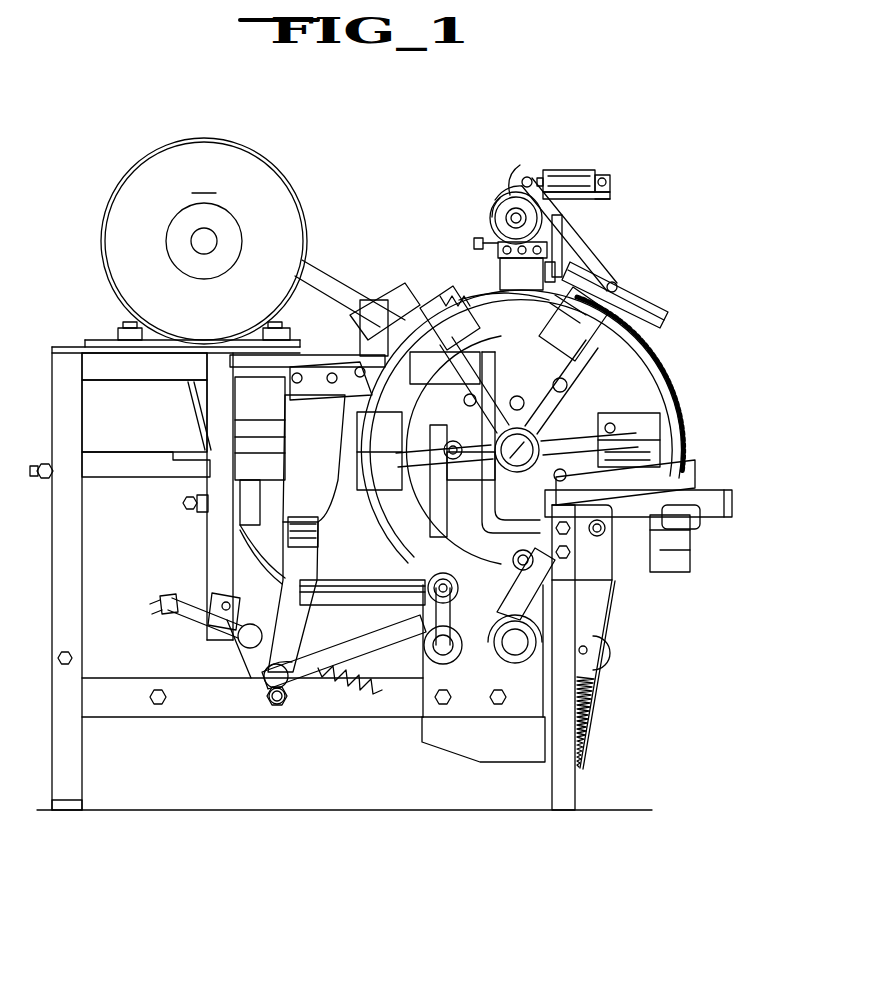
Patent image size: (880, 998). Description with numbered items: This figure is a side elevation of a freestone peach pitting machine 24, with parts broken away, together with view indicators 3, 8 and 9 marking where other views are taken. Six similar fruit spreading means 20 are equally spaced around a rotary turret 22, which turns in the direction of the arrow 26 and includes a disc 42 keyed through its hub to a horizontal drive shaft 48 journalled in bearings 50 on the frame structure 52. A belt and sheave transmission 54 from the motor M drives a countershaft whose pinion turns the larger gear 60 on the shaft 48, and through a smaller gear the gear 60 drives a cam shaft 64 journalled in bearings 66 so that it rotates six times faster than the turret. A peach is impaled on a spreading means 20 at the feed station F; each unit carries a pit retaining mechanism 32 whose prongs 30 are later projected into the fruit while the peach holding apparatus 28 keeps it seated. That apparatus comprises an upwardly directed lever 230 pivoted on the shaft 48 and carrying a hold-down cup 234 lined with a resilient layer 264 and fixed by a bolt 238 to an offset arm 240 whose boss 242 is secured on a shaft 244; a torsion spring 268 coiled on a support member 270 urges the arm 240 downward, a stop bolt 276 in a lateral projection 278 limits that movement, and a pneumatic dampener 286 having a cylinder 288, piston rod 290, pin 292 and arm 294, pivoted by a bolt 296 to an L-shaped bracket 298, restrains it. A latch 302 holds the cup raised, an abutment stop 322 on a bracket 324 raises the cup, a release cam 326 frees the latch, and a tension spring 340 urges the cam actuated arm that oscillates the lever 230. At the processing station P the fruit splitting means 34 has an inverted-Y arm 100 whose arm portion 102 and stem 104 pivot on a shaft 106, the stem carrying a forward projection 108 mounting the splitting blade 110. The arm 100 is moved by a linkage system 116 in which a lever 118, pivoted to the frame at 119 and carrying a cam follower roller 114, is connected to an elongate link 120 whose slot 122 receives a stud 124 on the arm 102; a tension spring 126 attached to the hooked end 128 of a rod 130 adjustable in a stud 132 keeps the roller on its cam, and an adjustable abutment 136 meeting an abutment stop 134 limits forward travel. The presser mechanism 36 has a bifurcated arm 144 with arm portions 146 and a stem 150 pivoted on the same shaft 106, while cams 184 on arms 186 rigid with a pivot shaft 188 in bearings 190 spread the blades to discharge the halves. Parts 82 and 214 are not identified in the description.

The machine 8 is at (440, 162).
The section line 3- 3 is at (597, 112).
The section line 9- 9 is at (540, 462).
The fruit spreading means 20 is at (410, 285).
The rotary turret 22 is at (648, 344).
The freestone peach pitting machine 24 is at (660, 232).
The arrow 26 is at (690, 356).
The peach holding apparatus 28 is at (655, 314).
The pit retaining prongs 30 is at (422, 313).
The pit retaining mechanism 32 is at (385, 478).
The fruit splitting means 34 is at (300, 425).
The fruit presser mechanism 36 is at (298, 443).
The disc 42 is at (445, 368).
The drive shaft 48 is at (526, 459).
The bearings 50 is at (500, 372).
The frame structure 52 is at (186, 719).
The belt and sheave transmission 54 is at (310, 270).
The gear 60 is at (497, 285).
The cam shaft 64 is at (515, 650).
The bearings 66 is at (503, 654).
The bar 82 is at (625, 481).
The arm 100 is at (213, 370).
The arm portion 102 is at (210, 550).
The stem 104 is at (215, 400).
The shaft 106 is at (277, 708).
The forward projection 108 is at (242, 378).
The splitting blade 110 is at (323, 390).
The cam follower roller 114 is at (603, 648).
The linkage system 116 is at (328, 617).
The lever 118 is at (600, 591).
The pivot connection 119 is at (626, 657).
The elongate link 120 is at (343, 637).
The longitudinal slot 122 is at (168, 601).
The stud 124 is at (225, 600).
The tension spring 126 is at (342, 683).
The hooked end 128 is at (298, 696).
The rod 130 is at (238, 628).
The stud 132 is at (247, 645).
The abutment stop 134 is at (252, 512).
The adjustable abutment 136 is at (182, 503).
The bifurcated arm 144 is at (300, 590).
The arm portion 146 is at (270, 665).
The stem 150 is at (312, 458).
The cams 184 is at (430, 427).
The arms 186 is at (422, 595).
The pivot shaft 188 is at (432, 640).
The bearings 190 is at (452, 658).
The plate 214 is at (420, 392).
The lever 230 is at (547, 293).
The hold-down cup 234 is at (612, 298).
The bolt 238 is at (628, 286).
The offset arm 240 is at (568, 247).
The boss 242 is at (510, 214).
The shaft 244 is at (513, 220).
The resilient layer 264 is at (560, 310).
The torsion spring 268 is at (507, 190).
The cylindrical support member 270 is at (508, 207).
The stop bolt 276 is at (473, 245).
The lateral projection 278 is at (497, 248).
The pneumatic dampener 286 is at (577, 173).
The cylinder 288 is at (600, 170).
The piston rod 290 is at (538, 177).
The pin 292 is at (528, 178).
The arm 294 is at (523, 177).
The bolt 296 is at (613, 180).
The L-shaped bracket 298 is at (610, 197).
The latch 302 is at (563, 230).
The abutment stop 322 is at (387, 293).
The bracket 324 is at (350, 337).
The release cam 326 is at (566, 265).
The tension spring 340 is at (594, 728).
The processing station P is at (360, 460).
The feed station F is at (690, 423).